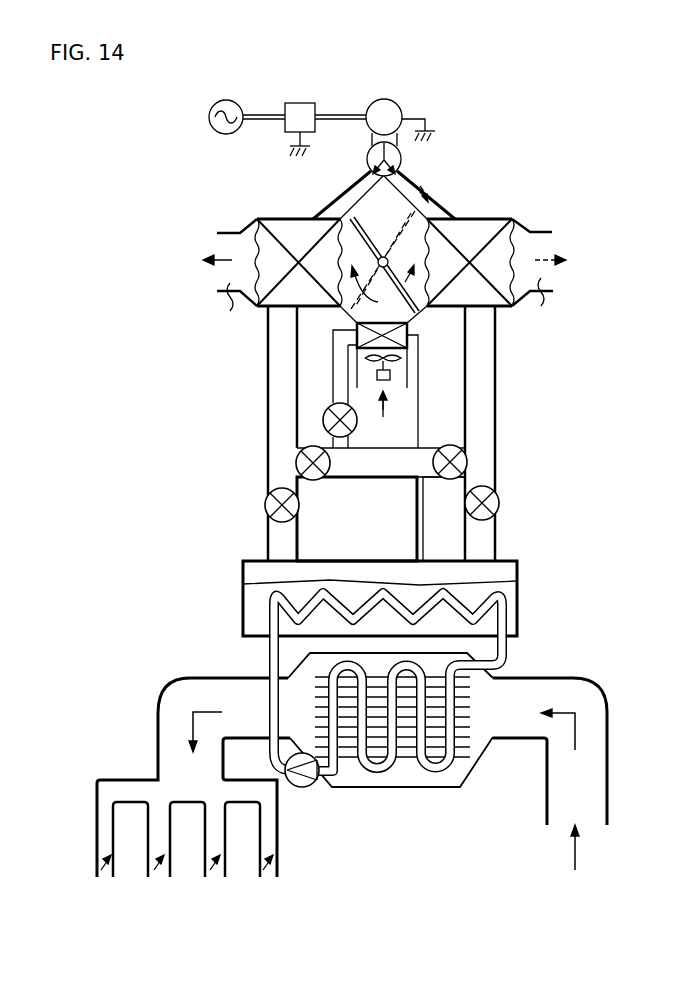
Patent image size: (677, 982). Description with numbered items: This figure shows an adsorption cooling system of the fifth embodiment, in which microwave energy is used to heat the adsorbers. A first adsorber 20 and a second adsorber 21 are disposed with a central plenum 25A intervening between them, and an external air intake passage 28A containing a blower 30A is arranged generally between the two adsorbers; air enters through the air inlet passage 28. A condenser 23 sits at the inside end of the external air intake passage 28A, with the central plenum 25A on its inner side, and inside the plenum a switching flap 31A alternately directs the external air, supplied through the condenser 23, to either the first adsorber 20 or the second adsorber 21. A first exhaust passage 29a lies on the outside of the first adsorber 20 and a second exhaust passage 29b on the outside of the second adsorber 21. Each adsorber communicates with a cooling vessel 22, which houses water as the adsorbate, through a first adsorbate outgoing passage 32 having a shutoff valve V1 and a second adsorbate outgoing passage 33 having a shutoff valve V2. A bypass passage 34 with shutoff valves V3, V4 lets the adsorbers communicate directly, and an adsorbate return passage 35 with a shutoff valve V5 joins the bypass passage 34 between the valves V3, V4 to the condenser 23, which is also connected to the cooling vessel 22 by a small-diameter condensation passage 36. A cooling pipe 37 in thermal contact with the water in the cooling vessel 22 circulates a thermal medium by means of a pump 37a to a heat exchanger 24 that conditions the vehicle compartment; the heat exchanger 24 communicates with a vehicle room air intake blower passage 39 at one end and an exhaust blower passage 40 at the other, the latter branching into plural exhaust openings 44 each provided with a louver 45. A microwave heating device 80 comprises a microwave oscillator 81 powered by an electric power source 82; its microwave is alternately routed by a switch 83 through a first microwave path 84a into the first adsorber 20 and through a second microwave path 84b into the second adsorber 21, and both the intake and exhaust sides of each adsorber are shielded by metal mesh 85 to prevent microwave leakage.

The first adsorber 20 is at (288, 226).
The second adsorber 21 is at (472, 222).
The cooling vessel 22 is at (243, 606).
The condenser 23 is at (336, 337).
The heat exchanger 24 is at (403, 775).
The central plenum 25A is at (385, 232).
The air inlet passage 28 is at (430, 776).
The external air intake passage 28A is at (392, 381).
The first exhaust passage 29a is at (232, 314).
The second exhaust passage 29b is at (541, 306).
The blower 30A is at (409, 357).
The switching flap 31A is at (448, 206).
The first adsorbate outgoing passage 32 is at (284, 403).
The second adsorbate outgoing passage 33 is at (497, 384).
The bypass passage 34 is at (363, 470).
The adsorbate return passage 35 is at (338, 376).
The condensation passage 36 is at (422, 440).
The cooling pipe 37 is at (520, 606).
The pump 37a is at (306, 787).
The vehicle room air intake blower passage 39 is at (606, 790).
The exhaust blower passage 40 is at (162, 724).
The exhaust openings 44 is at (278, 836).
The louver 45 is at (267, 871).
The microwave heating device 80 is at (368, 90).
The microwave oscillator 81 is at (392, 104).
The electric power source 82 is at (303, 106).
The switch 83 is at (368, 164).
The first microwave path 84a is at (352, 174).
The second microwave path 84b is at (412, 180).
The metal mesh 85 is at (249, 232).
The shutoff valve V1 is at (265, 505).
The shutoff valve V2 is at (500, 503).
The shutoff valve V3 is at (296, 463).
The shutoff valve V4 is at (468, 462).
The shutoff valve V5 is at (323, 418).